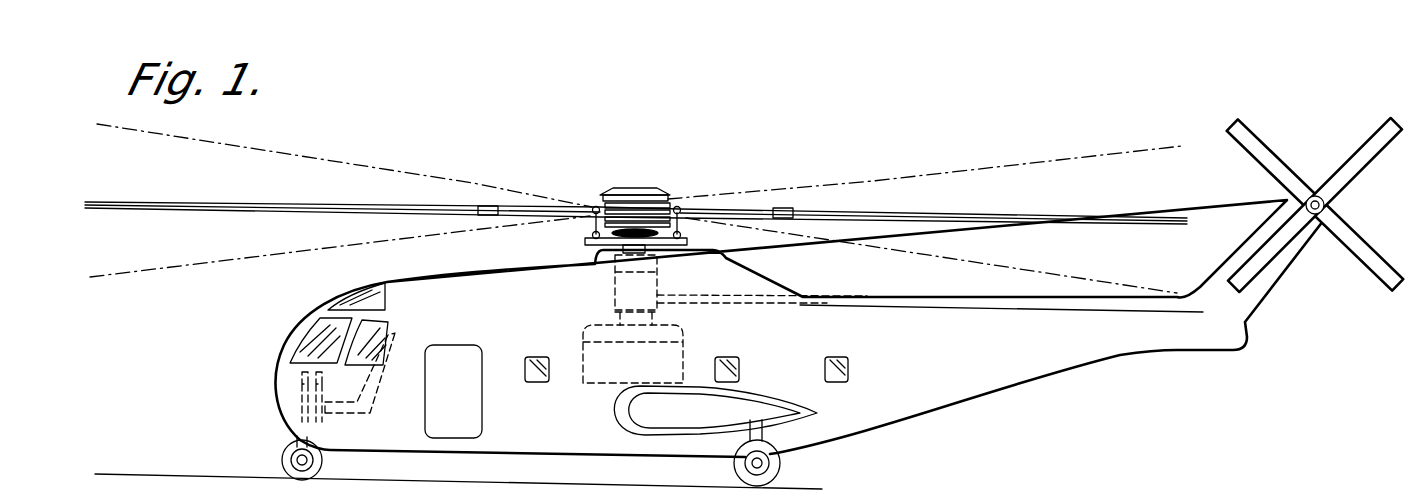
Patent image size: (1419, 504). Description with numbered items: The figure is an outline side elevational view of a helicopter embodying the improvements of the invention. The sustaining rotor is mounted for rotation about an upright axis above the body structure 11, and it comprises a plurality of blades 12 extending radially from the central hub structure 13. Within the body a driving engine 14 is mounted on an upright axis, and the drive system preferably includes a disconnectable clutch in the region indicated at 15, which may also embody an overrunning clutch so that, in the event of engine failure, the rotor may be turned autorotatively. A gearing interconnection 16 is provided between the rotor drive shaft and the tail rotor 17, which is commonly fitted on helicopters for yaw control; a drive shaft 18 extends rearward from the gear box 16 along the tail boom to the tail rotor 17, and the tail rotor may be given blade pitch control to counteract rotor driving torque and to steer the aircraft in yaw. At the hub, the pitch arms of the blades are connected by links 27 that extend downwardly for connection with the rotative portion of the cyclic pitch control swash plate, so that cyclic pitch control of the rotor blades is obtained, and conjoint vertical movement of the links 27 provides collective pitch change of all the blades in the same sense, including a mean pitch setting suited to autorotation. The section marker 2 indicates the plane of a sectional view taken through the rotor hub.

The body structure 11 is at (913, 393).
The blades 12 is at (180, 204).
The central hub structure 13 is at (648, 186).
The driving engine 14 is at (588, 386).
The clutch region 15 is at (614, 313).
The gearing interconnection 16 is at (614, 290).
The tail rotor 17 is at (1345, 199).
The drive shaft 18 is at (733, 302).
The links 27 is at (590, 233).
The section line 2- 2 is at (873, 152).